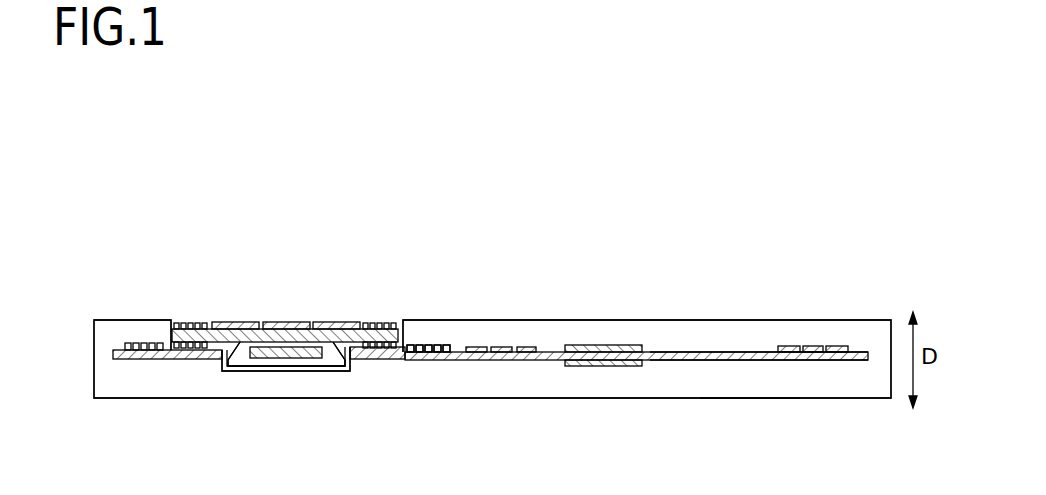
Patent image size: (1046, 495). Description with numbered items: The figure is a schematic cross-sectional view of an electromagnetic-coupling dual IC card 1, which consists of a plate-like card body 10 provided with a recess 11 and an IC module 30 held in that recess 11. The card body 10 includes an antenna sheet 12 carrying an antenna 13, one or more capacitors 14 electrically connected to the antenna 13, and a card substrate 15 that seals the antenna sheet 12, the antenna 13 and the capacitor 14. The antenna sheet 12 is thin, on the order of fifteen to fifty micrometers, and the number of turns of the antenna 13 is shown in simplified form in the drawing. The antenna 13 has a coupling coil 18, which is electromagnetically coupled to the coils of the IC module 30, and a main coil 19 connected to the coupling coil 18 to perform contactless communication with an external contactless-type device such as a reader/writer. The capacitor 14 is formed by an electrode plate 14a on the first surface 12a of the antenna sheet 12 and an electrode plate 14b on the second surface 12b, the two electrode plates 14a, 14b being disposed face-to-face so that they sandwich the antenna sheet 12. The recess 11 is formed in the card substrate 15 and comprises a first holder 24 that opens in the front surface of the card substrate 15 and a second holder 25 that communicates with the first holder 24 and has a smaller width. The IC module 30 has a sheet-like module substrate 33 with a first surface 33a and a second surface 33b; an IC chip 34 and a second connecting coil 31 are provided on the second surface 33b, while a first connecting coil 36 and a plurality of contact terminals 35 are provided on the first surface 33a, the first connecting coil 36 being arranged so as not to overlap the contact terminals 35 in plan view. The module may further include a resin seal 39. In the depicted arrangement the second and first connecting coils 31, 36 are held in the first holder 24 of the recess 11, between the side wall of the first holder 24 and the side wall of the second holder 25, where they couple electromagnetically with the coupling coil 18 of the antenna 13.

The electromagnetic-coupling dual IC card 1 is at (804, 268).
The card body 10 is at (845, 320).
The recess 11 is at (242, 274).
The antenna sheet 12 is at (805, 352).
The first surface of antenna sheet 12a is at (700, 352).
The second surface of antenna sheet 12b is at (710, 360).
The antenna 13 is at (471, 294).
The capacitor 14 is at (617, 307).
The electrode plate 14a is at (598, 345).
The electrode plate 14b is at (634, 366).
The card substrate 15 is at (758, 398).
The coupling coil 18 is at (143, 343).
The main coil 19 is at (501, 312).
The first holder 24 is at (178, 322).
The second holder 25 is at (271, 291).
The IC module 30 is at (289, 283).
The second connecting coil 31 is at (378, 359).
The module substrate 33 is at (336, 366).
The first surface of module substrate 33a is at (363, 322).
The second surface of module substrate 33b is at (360, 352).
The IC chip 34 is at (285, 358).
The contact terminals 35 is at (343, 322).
The first connecting coil 36 is at (388, 323).
The resin seal 39 is at (230, 371).